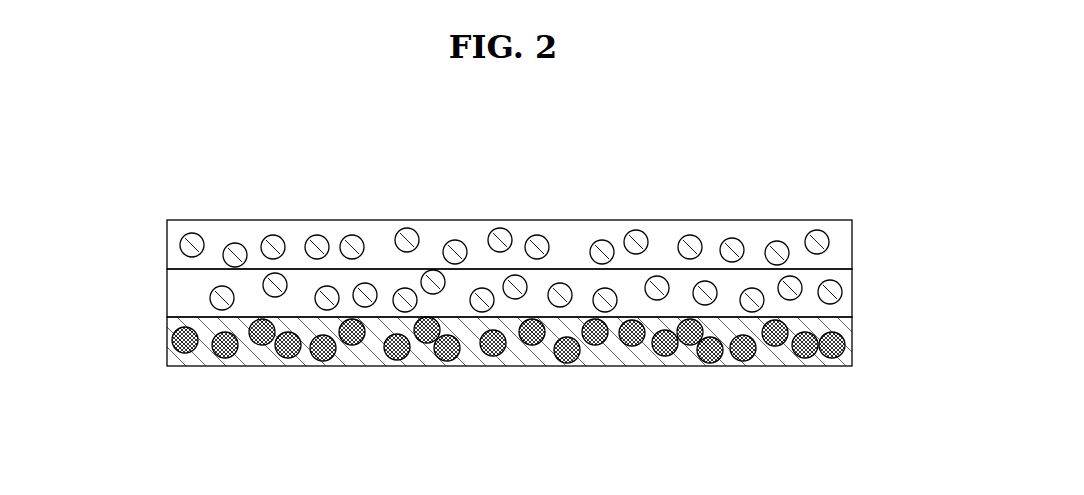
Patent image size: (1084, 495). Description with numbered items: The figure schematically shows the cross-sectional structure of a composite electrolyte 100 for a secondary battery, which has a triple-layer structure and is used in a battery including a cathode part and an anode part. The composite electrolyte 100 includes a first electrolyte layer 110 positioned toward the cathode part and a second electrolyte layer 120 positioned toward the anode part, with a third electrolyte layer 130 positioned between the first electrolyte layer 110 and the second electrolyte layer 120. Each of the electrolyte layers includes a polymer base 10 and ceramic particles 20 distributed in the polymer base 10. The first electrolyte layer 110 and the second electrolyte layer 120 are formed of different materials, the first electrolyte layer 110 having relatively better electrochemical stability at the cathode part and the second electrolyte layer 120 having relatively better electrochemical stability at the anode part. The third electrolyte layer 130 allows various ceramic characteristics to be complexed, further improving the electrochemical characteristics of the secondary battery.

The composite electrolyte 100 is at (232, 150).
The first electrolyte layer 110 is at (568, 220).
The third electrolyte layer 130 is at (167, 292).
The second electrolyte layer 120 is at (540, 366).
The polymer base 10 is at (820, 328).
The ceramic particles 20 is at (700, 240).